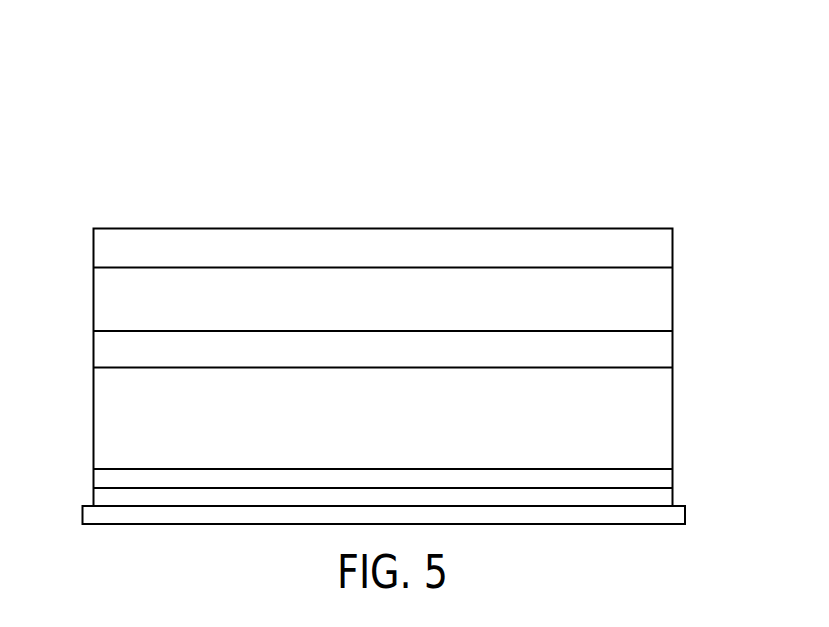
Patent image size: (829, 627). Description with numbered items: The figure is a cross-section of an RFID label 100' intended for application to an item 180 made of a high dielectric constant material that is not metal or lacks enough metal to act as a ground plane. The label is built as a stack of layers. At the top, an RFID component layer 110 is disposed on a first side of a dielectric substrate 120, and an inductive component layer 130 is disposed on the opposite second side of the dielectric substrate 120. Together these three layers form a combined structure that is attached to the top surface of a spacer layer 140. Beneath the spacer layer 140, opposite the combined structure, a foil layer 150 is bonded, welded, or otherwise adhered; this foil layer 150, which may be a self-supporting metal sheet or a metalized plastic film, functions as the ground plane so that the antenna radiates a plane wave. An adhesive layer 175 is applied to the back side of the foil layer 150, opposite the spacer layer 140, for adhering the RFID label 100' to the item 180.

The RFID label 100' is at (384, 279).
The RFID component layer 110 is at (217, 240).
The dielectric substrate 120 is at (103, 308).
The inductive component layer 130 is at (663, 348).
The spacer layer 140 is at (663, 423).
The foil layer 150 is at (103, 478).
The adhesive layer 175 is at (663, 497).
The item 180 is at (115, 517).